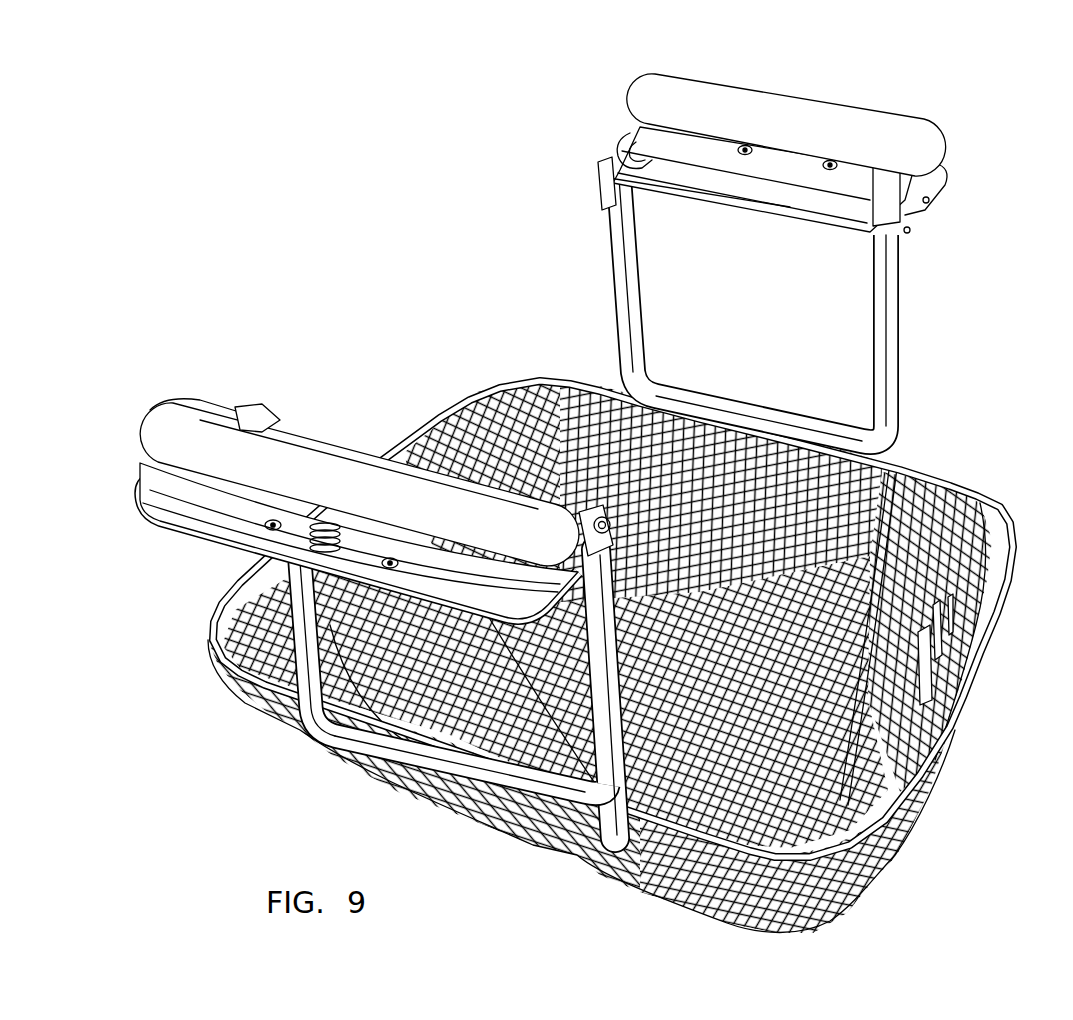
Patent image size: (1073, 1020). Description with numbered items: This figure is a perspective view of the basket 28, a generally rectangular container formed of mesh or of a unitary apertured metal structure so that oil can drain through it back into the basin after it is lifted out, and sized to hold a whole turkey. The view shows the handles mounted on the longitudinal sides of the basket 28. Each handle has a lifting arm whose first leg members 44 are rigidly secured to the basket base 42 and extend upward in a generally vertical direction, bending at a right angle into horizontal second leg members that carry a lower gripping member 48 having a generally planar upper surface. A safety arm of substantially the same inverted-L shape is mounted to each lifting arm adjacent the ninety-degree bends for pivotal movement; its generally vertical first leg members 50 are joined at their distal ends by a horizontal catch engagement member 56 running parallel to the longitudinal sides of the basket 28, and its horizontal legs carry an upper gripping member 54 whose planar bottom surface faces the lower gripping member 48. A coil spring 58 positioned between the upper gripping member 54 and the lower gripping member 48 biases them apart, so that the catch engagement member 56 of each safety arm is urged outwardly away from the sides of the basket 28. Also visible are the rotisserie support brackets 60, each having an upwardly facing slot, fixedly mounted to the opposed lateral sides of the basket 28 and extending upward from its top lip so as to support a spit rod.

The basket 28 is at (635, 656).
The basket base 42 is at (955, 552).
The first leg members 44 is at (610, 282).
The lower gripping member 48 is at (932, 176).
The first leg members 50 is at (650, 290).
The upper gripping member 54 is at (712, 95).
The catch engagement member 56 is at (733, 392).
The coil spring 58 is at (300, 530).
The rotisserie support brackets 60 is at (925, 667).